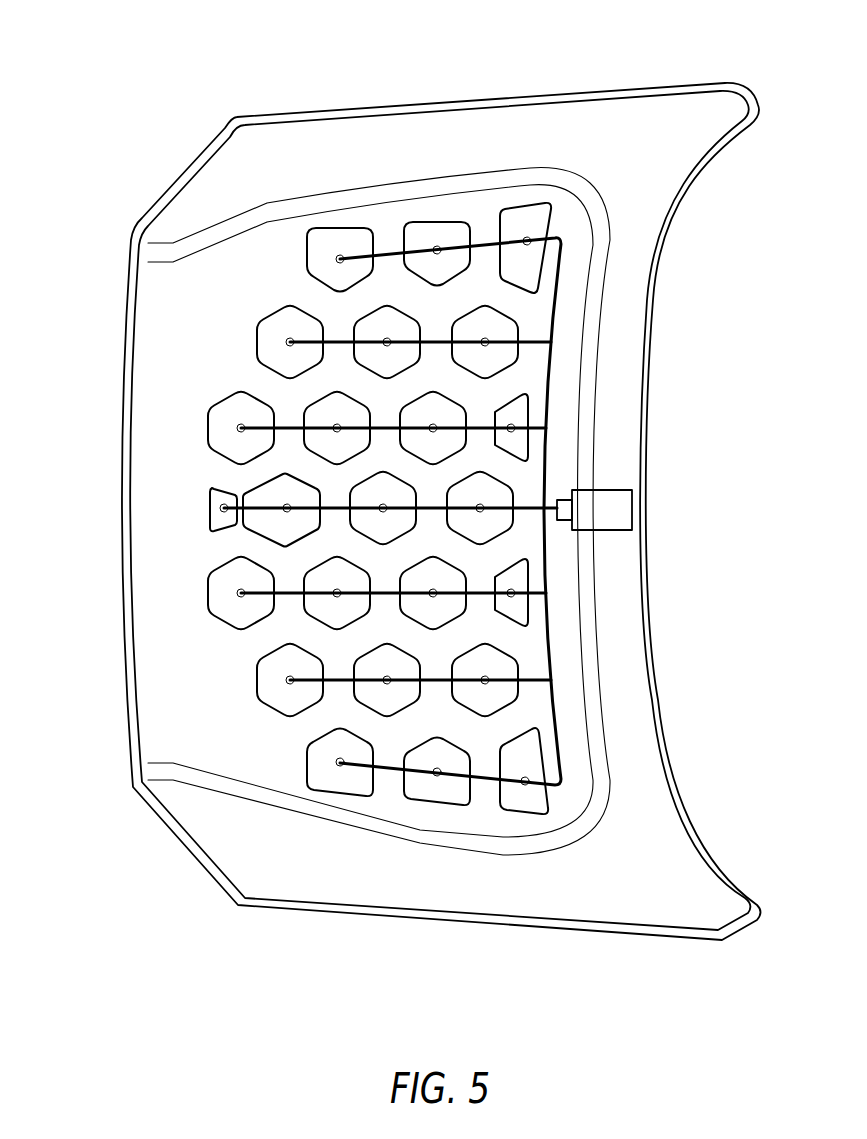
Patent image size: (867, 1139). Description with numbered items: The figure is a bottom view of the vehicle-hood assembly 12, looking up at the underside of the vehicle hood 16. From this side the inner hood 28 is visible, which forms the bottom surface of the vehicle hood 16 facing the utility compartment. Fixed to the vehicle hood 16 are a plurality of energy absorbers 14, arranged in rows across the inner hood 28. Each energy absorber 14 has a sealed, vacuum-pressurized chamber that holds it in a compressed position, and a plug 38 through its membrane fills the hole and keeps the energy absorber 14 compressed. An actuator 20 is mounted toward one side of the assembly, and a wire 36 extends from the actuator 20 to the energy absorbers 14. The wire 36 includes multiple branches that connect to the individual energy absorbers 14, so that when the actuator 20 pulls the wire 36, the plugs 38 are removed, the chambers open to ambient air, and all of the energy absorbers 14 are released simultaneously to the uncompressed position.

The vehicle-hood assembly 12 is at (371, 61).
The energy absorber 14 is at (310, 256).
The vehicle hood 16 is at (632, 87).
The actuator 20 is at (632, 510).
The inner hood 28 is at (660, 157).
The wire 36 is at (480, 241).
The plug 38 is at (387, 680).